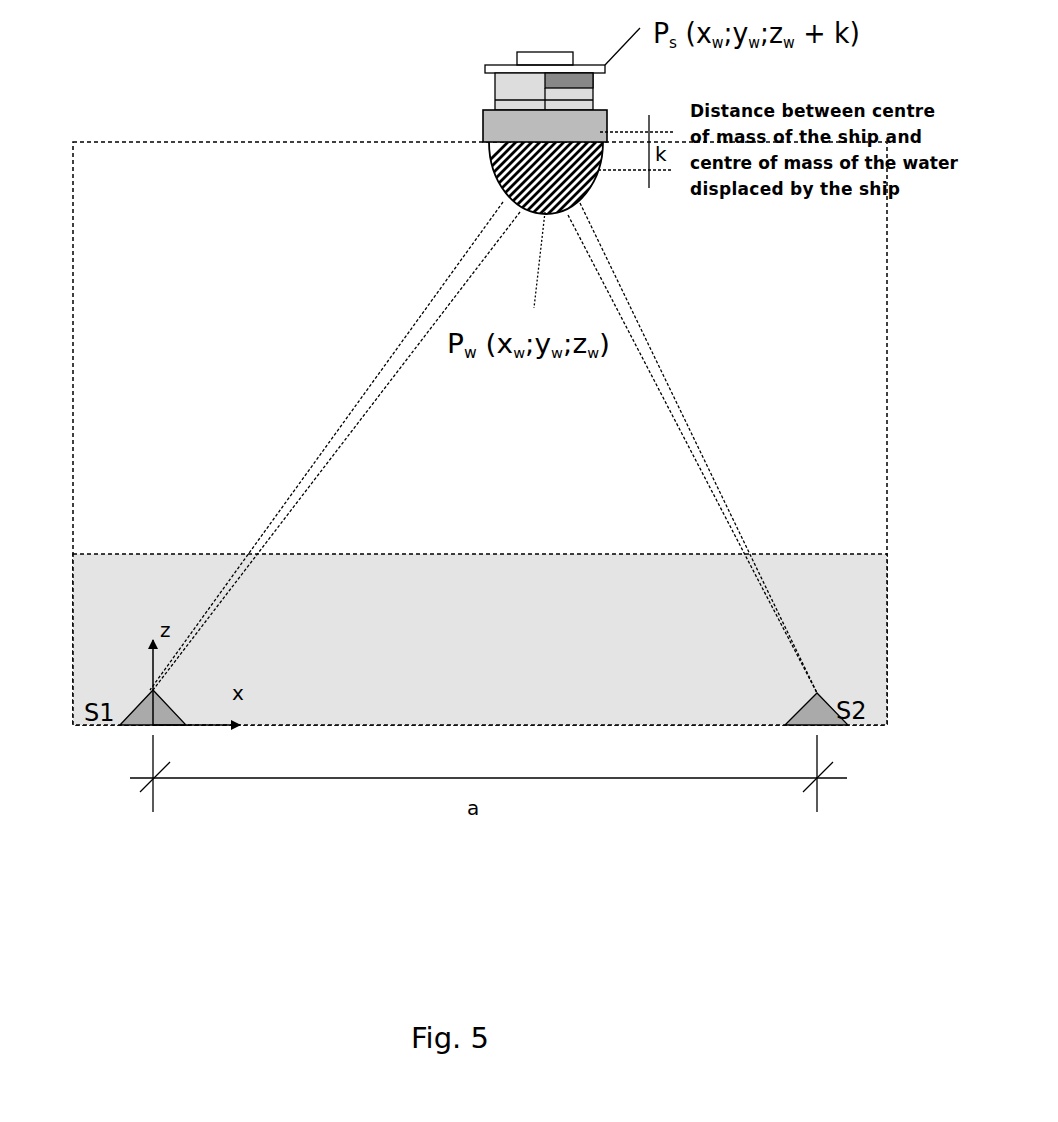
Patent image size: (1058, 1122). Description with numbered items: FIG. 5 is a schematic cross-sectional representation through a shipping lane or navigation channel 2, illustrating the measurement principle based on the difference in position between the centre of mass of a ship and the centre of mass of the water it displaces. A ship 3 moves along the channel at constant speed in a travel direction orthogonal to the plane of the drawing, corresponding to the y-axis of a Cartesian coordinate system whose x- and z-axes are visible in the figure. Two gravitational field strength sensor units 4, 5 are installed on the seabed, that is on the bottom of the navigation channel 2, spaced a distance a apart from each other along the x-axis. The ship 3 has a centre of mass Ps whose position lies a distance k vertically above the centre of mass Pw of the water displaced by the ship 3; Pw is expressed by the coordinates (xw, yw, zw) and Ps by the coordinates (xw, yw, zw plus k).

The navigation channel 2 is at (433, 716).
The ship 3 is at (487, 108).
The gravitational field strength sensor unit 4 is at (137, 717).
The gravitational field strength sensor unit 5 is at (827, 718).